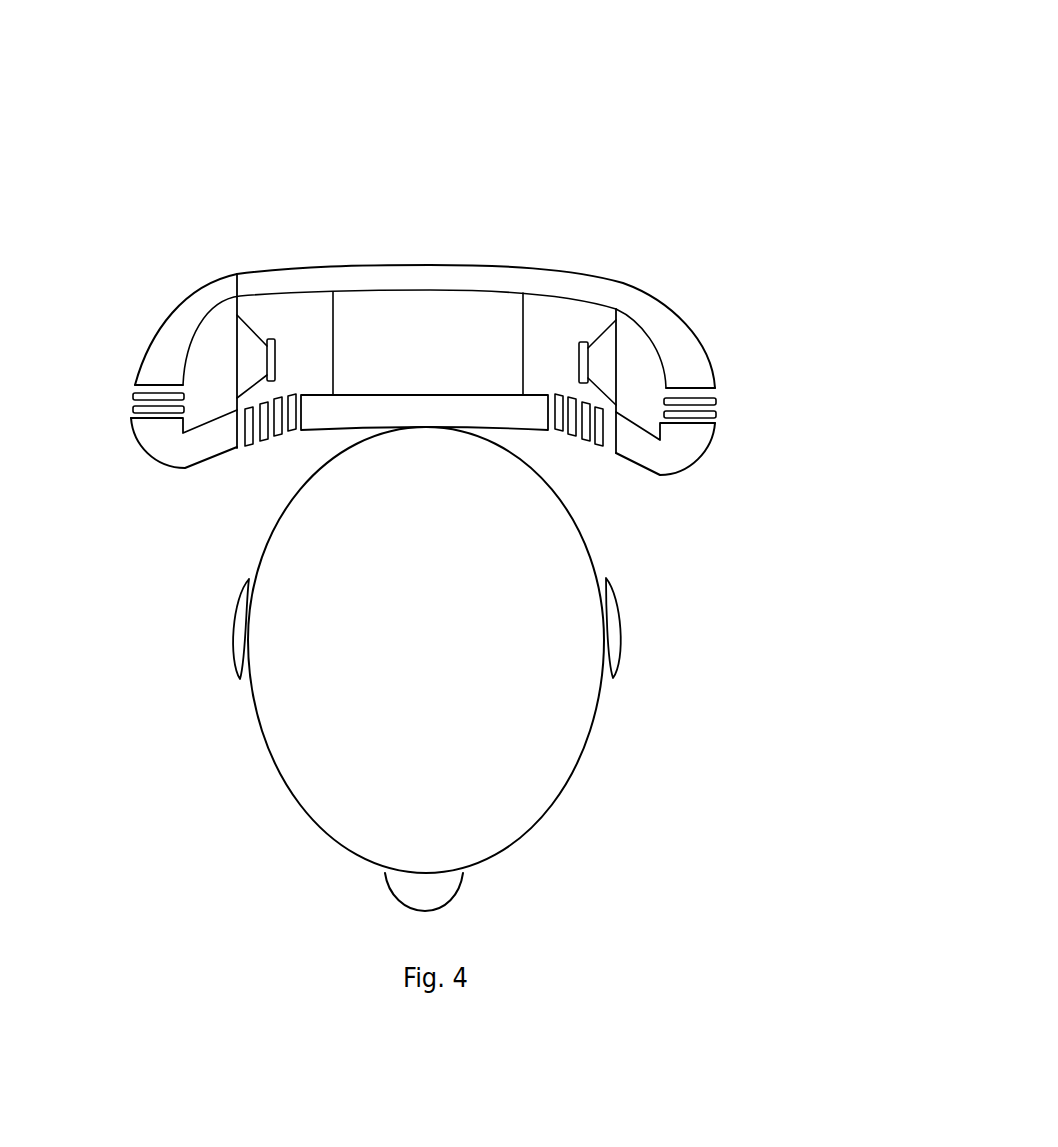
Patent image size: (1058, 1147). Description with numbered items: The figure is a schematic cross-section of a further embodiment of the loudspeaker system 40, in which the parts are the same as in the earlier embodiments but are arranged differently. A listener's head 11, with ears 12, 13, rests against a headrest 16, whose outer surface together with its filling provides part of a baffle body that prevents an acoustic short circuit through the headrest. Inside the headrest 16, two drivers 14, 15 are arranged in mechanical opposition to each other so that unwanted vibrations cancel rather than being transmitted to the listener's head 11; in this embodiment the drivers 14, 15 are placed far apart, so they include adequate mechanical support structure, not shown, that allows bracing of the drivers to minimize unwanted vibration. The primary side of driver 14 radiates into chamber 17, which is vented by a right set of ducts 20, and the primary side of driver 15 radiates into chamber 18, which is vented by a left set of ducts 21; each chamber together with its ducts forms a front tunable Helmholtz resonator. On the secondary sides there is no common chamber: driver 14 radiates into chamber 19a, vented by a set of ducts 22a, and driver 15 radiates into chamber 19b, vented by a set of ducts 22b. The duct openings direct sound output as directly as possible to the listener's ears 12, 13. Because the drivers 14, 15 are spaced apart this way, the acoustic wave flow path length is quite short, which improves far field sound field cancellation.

The head-worn audio device 40 is at (608, 115).
The listener's head 11 is at (461, 704).
The listener's ear 12 is at (235, 603).
The listener's ear 13 is at (617, 597).
The driver 14 is at (248, 360).
The driver 15 is at (605, 358).
The headrest 16 is at (712, 446).
The chamber 17 is at (212, 363).
The chamber 18 is at (640, 366).
The chamber 19a is at (305, 320).
The chamber 19b is at (545, 337).
The right set of ducts 20 is at (257, 445).
The left set of ducts 21 is at (567, 435).
The set of ducts 22a is at (130, 408).
The set of ducts 22b is at (717, 414).